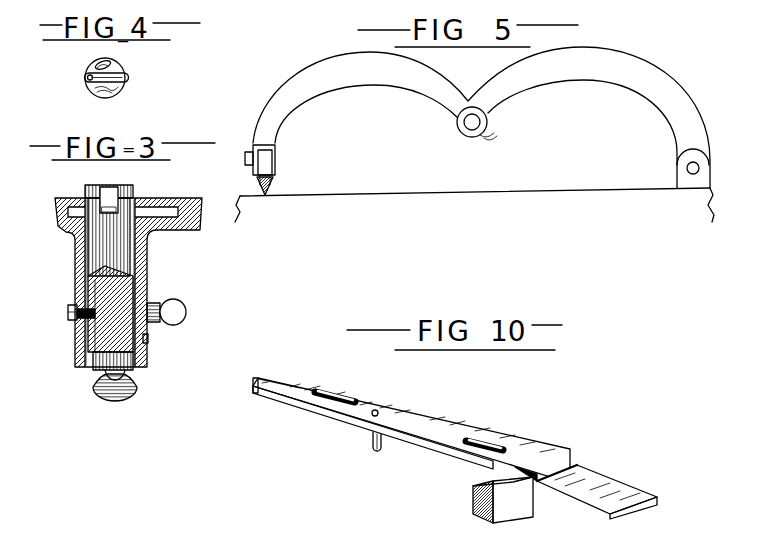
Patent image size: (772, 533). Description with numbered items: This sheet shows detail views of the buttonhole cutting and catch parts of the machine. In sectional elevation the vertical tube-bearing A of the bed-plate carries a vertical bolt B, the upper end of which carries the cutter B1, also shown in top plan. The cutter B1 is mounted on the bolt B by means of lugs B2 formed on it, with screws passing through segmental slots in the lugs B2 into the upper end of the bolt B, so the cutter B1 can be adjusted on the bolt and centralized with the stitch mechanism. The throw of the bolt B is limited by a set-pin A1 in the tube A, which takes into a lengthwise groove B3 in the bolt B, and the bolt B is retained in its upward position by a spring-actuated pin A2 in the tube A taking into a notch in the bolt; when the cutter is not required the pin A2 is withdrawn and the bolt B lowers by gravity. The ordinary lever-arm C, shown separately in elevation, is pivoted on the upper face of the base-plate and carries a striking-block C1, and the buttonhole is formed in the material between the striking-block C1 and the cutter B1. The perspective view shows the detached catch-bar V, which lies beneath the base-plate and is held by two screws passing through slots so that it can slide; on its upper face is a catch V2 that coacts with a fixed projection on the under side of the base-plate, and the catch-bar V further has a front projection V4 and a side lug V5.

In FIG. 3, the vertical tube-bearing A is at (75, 258).
In FIG. 3, the set-pin A1 is at (70, 314).
In FIG. 3, the spring-actuated pin A2 is at (175, 323).
In FIG. 3, the vertical bolt B is at (110, 246).
In FIG. 4, the cutter B1 is at (126, 79).
In FIG. 3, the cutter B1 is at (109, 200).
In FIG. 5, the cutter B1 is at (258, 192).
In FIG. 4, the lugs B2 is at (95, 70).
In FIG. 3, the lengthwise groove B3 is at (95, 338).
In FIG. 5, the lever-arm C is at (393, 82).
In FIG. 5, the striking-block C1 is at (268, 176).
In FIG. 10, the catch-bar V is at (415, 418).
In FIG. 10, the catch V2 is at (576, 465).
In FIG. 10, the front projection V4 is at (283, 382).
In FIG. 10, the side lug V5 is at (482, 500).